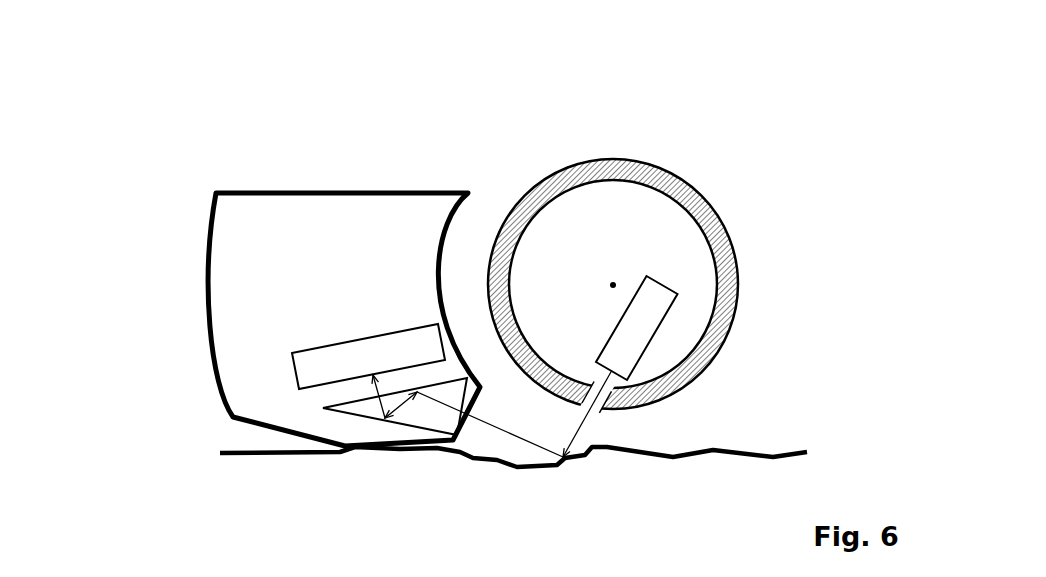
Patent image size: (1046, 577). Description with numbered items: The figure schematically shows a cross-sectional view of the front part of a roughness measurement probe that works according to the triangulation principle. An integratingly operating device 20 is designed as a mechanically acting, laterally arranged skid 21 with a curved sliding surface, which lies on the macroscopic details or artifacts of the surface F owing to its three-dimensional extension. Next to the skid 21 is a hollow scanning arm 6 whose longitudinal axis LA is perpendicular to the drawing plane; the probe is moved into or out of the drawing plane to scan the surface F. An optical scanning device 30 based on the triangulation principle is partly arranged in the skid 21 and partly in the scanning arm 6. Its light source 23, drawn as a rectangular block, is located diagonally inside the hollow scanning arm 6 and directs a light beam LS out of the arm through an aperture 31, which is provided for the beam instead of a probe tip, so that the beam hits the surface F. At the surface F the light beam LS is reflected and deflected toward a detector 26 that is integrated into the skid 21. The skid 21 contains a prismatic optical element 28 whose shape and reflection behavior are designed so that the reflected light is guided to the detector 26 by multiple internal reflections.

The integratingly operating device 20 is at (291, 241).
The skid 21 is at (235, 225).
The detector 26 is at (300, 352).
The prismatic optical element 28 is at (363, 411).
The hollow scanning arm 6 is at (642, 249).
The optical scanning device 30 is at (645, 213).
The aperture 31 is at (595, 385).
The light source 23 is at (677, 302).
The longitudinal axis LA is at (611, 284).
The light beam LS is at (590, 417).
The surface F is at (725, 455).